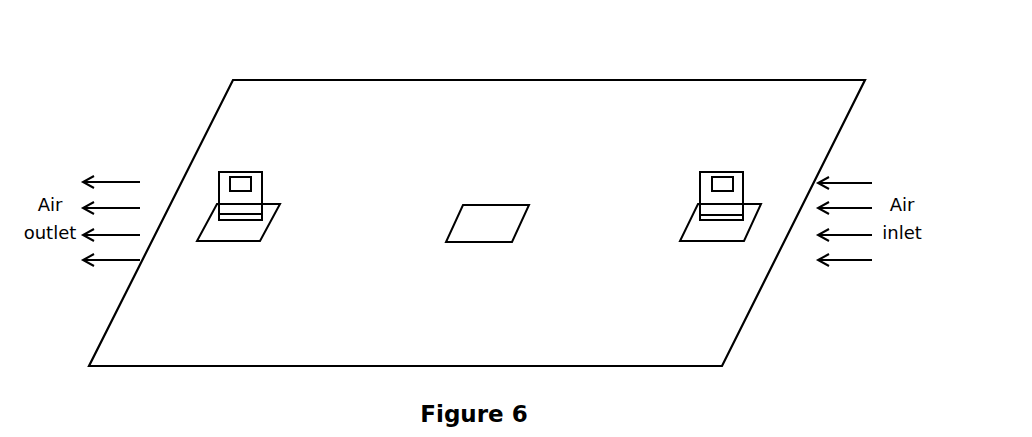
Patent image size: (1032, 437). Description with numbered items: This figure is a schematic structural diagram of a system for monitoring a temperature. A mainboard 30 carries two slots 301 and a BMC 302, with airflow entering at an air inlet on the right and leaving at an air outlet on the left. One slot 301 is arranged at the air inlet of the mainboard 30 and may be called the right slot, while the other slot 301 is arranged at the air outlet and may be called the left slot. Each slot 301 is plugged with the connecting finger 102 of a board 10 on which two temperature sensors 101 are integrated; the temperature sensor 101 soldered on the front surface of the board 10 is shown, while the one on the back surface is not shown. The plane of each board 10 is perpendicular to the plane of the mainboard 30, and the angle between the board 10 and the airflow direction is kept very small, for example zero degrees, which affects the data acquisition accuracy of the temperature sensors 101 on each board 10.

The mainboard 30 is at (580, 78).
The BMC 302 is at (487, 223).
The slot 301 is at (228, 234).
The board 10 is at (263, 193).
The temperature sensor 101 is at (238, 183).
The connecting finger 102 is at (252, 220).